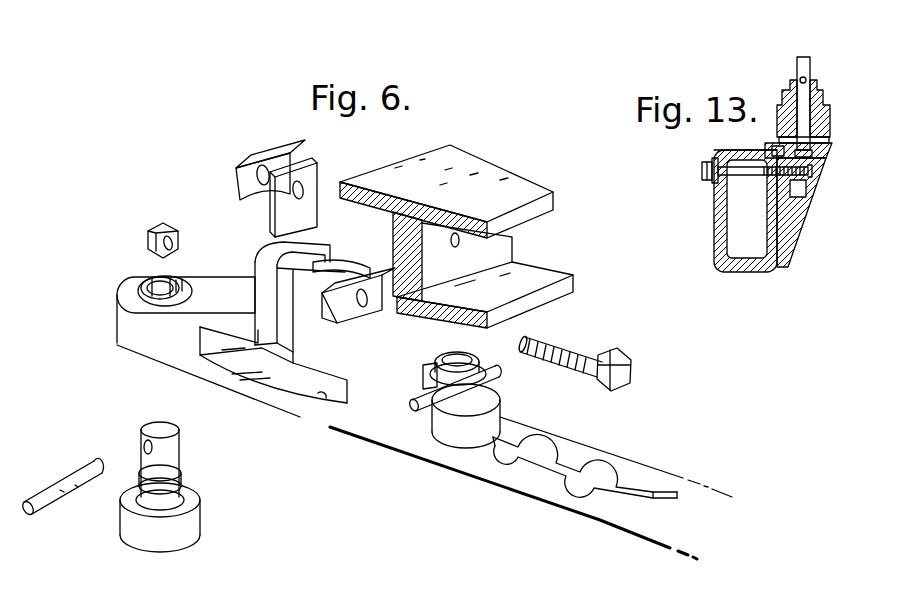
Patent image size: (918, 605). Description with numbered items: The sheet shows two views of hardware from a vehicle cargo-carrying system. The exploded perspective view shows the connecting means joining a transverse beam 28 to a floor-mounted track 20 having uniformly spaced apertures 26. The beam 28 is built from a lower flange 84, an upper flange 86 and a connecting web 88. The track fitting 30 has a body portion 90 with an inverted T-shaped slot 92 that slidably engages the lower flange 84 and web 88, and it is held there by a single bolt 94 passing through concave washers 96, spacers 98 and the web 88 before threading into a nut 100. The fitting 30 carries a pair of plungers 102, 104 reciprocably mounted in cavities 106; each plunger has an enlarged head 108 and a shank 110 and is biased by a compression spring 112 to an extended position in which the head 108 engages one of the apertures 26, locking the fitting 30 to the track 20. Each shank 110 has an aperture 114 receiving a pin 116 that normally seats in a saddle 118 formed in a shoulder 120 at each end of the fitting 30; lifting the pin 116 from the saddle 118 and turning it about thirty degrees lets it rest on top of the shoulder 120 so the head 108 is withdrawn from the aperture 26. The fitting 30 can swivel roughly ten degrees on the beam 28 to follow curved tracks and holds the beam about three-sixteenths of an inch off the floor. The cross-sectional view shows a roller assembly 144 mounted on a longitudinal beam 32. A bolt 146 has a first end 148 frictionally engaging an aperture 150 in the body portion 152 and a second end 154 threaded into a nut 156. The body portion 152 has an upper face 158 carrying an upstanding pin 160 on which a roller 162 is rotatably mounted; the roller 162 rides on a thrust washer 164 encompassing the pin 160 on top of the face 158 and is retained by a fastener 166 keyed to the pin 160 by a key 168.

In FIG. 6, the track 20 is at (660, 477).
In FIG. 6, the apertures 26 is at (508, 462).
In FIG. 6, the transverse beam 28 is at (572, 294).
In FIG. 6, the track fitting 30 is at (508, 395).
In FIG. 13, the longitudinal beam 32 is at (758, 278).
In FIG. 6, the lower flange 84 is at (528, 310).
In FIG. 6, the upper flange 86 is at (545, 210).
In FIG. 6, the connecting web 88 is at (398, 233).
In FIG. 6, the body portion 90 is at (143, 343).
In FIG. 6, the inverted T-shaped slot 92 is at (323, 397).
In FIG. 6, the bolt 94 is at (590, 353).
In FIG. 6, the concave washers 96 is at (240, 178).
In FIG. 6, the spacers 98 is at (318, 166).
In FIG. 6, the nut 100 is at (173, 221).
In FIG. 6, the plunger 102 is at (163, 547).
In FIG. 6, the plunger 104 is at (450, 353).
In FIG. 6, the cavities 106 is at (153, 278).
In FIG. 6, the enlarged head 108 is at (197, 532).
In FIG. 6, the shank 110 is at (182, 448).
In FIG. 6, the compression spring 112 is at (190, 473).
In FIG. 6, the aperture 114 is at (140, 441).
In FIG. 6, the pin 116 is at (499, 373).
In FIG. 6, the saddle 118 is at (140, 293).
In FIG. 6, the shoulder 120 is at (195, 278).
In FIG. 13, the roller assembly 144 is at (812, 52).
In FIG. 13, the bolt 146 is at (743, 176).
In FIG. 13, the first end 148 is at (803, 180).
In FIG. 13, the aperture 150 is at (808, 154).
In FIG. 13, the body portion 152 is at (795, 223).
In FIG. 13, the second end 154 is at (716, 152).
In FIG. 13, the nut 156 is at (702, 172).
In FIG. 13, the upper face 158 is at (773, 147).
In FIG. 13, the upstanding pin 160 is at (801, 57).
In FIG. 13, the roller 162 is at (777, 110).
In FIG. 13, the thrust washer 164 is at (831, 141).
In FIG. 13, the fastener 166 is at (830, 95).
In FIG. 13, the key 168 is at (812, 82).